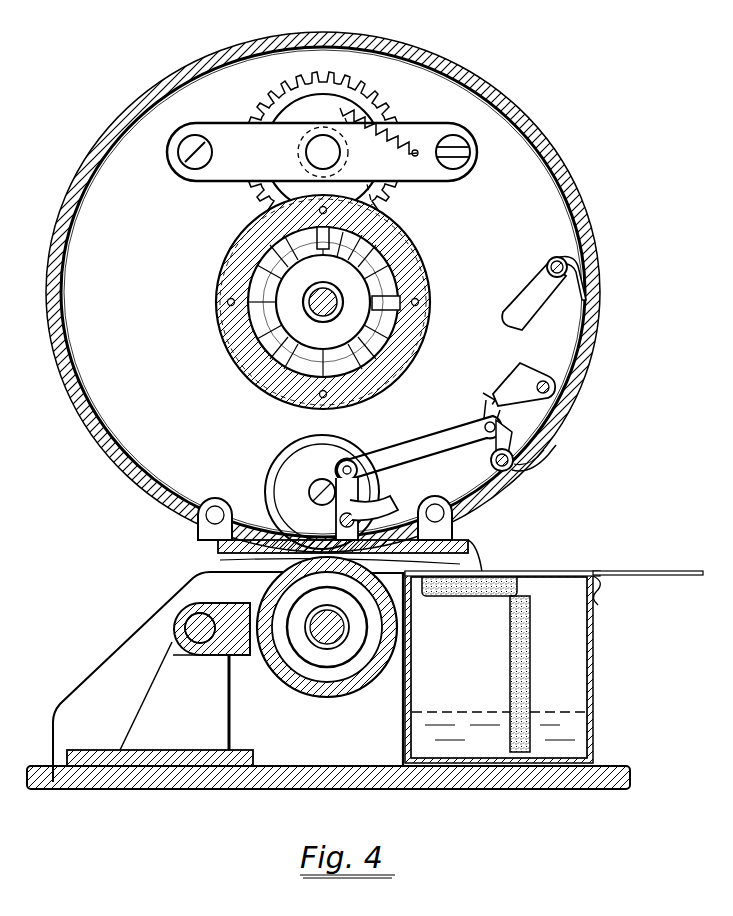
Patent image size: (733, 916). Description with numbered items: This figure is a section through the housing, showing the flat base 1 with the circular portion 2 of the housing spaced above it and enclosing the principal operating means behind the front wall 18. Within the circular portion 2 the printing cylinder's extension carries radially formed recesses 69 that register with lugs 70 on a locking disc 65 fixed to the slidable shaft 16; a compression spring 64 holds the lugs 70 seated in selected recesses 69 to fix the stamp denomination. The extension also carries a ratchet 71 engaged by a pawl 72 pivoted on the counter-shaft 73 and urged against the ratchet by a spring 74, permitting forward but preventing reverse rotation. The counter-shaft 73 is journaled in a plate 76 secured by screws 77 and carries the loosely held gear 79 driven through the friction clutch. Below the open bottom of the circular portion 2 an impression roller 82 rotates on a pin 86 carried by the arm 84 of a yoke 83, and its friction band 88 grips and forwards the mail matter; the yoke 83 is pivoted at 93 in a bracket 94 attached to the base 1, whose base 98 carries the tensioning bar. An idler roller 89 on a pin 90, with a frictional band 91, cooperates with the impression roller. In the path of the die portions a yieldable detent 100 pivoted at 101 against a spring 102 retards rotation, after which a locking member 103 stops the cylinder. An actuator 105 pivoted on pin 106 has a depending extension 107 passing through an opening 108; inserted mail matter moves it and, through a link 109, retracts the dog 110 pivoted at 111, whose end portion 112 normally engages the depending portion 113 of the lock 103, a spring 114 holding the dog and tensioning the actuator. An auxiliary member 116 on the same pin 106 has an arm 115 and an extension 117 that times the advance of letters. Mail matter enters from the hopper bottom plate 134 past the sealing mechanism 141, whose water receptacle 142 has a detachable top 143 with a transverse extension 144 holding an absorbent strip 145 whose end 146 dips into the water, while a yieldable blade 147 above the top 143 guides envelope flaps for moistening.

The base 1 is at (472, 789).
The circular portion 2 is at (583, 406).
The shaft 16 is at (340, 316).
The front wall 18 is at (323, 292).
The compression spring 64 is at (352, 304).
The locking disc 65 is at (393, 283).
The recesses 69 is at (258, 376).
The lugs 70 is at (316, 240).
The ratchet 71 is at (240, 262).
The pawl 72 is at (346, 147).
The counter-shaft 73 is at (320, 150).
The spring 74 is at (375, 120).
The plate 76 is at (329, 140).
The screws 77 is at (190, 158).
The gear 79 is at (292, 102).
The impression roller 82 is at (343, 670).
The yoke 83 is at (238, 660).
The arm 84 is at (274, 668).
The pin 86 is at (320, 645).
The friction band 88 is at (323, 650).
The idler roller 89 is at (300, 488).
The pin 90 is at (312, 483).
The frictional band 91 is at (282, 462).
The pivot 93 is at (195, 625).
The bracket 94 is at (170, 683).
The base of bracket 98 is at (97, 750).
The yieldable detent 100 is at (535, 274).
The pivot 101 is at (556, 258).
The spring 102 is at (546, 270).
The locking member 103 is at (518, 378).
The actuator 105 is at (280, 508).
The pivot pin 106 is at (385, 508).
The depending extension 107 is at (470, 548).
The opening 108 is at (235, 558).
The link 109 is at (415, 448).
The dog 110 is at (505, 426).
The pivot 111 is at (496, 470).
The end portion 112 is at (492, 398).
The depending portion 113 is at (484, 410).
The spring 114 is at (554, 444).
The arm 115 is at (370, 460).
The auxiliary member 116 is at (340, 509).
The extension 117 is at (290, 578).
The bottom plate 134 is at (660, 572).
The sealing mechanism 141 is at (499, 667).
The receptacle 142 is at (557, 646).
The detachable top 143 is at (562, 572).
The transverse extension 144 is at (438, 598).
The strip of absorbent material 145 is at (558, 669).
The end 146 is at (530, 690).
The blade 147 is at (498, 572).